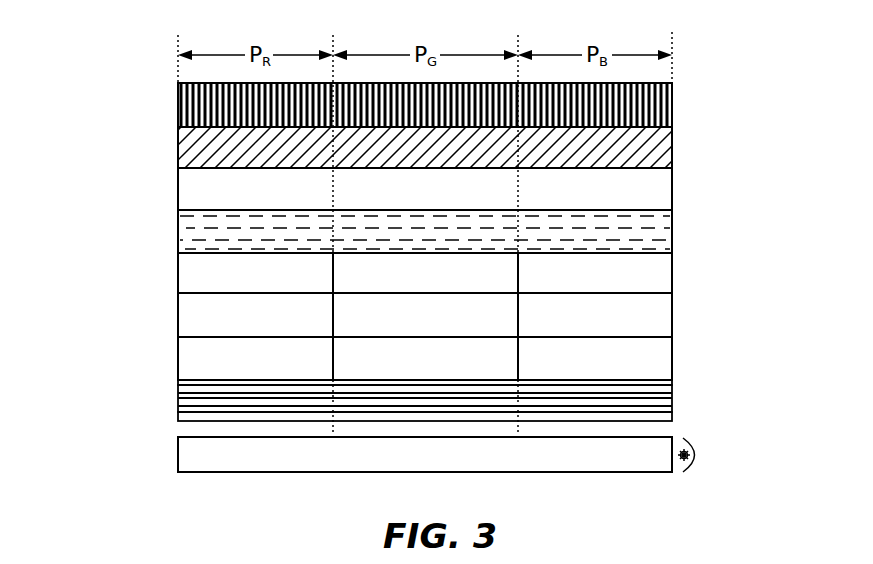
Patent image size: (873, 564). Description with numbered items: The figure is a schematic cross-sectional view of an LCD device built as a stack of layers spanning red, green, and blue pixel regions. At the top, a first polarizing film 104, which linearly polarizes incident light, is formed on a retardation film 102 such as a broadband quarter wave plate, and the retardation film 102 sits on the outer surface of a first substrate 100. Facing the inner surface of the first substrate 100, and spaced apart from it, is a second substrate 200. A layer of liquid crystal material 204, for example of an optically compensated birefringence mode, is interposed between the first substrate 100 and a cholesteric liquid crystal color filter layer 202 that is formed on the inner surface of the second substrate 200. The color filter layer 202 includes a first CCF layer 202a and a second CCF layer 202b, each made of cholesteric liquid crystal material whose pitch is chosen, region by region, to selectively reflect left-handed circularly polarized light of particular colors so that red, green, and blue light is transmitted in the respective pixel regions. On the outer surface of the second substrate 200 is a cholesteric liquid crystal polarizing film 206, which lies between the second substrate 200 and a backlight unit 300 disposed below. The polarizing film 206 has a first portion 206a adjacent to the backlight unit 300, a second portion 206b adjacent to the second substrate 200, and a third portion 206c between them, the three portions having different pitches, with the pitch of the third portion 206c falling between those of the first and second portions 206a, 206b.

The first polarizing film 104 is at (672, 103).
The retardation film 102 is at (672, 149).
The first substrate 100 is at (672, 189).
The layer of liquid crystal material 204 is at (672, 232).
The cholesteric liquid crystal color filter layer 202 is at (509, 316).
The first CCF layer 202a is at (672, 275).
The second CCF layer 202b is at (672, 312).
The second substrate 200 is at (672, 356).
The cholesteric liquid crystal polarizing film 206 is at (402, 374).
The first portion 206a is at (208, 422).
The second portion 206b is at (222, 379).
The third portion 206c is at (176, 387).
The backlight unit 300 is at (722, 455).